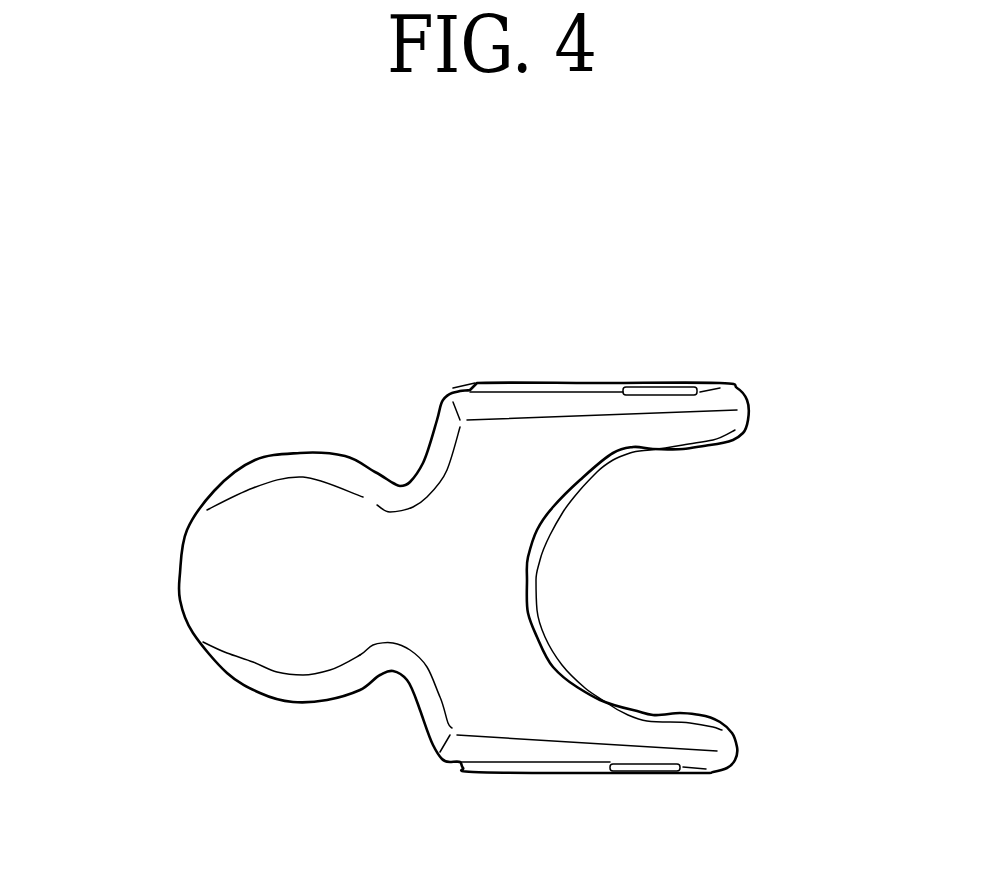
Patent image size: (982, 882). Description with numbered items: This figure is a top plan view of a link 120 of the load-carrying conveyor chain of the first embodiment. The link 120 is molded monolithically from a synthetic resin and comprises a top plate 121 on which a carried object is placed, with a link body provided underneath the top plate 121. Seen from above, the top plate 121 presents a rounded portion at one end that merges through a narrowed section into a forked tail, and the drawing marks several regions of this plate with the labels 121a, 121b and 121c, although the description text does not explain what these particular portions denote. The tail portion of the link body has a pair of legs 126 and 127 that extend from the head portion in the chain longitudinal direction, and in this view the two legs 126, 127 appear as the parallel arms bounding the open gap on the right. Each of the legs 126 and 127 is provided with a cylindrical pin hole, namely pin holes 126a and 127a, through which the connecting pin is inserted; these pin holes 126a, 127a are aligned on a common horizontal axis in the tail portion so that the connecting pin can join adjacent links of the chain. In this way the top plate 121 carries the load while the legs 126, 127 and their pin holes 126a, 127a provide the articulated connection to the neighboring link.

The link 120 is at (433, 383).
The top plate 121 is at (442, 587).
The flat surface 121a is at (537, 407).
The spherical portion 121b is at (223, 573).
The neck portion 121c is at (437, 452).
The leg 126 is at (540, 773).
The pin hole 126a is at (660, 770).
The leg 127 is at (713, 387).
The pin hole 127a is at (657, 385).